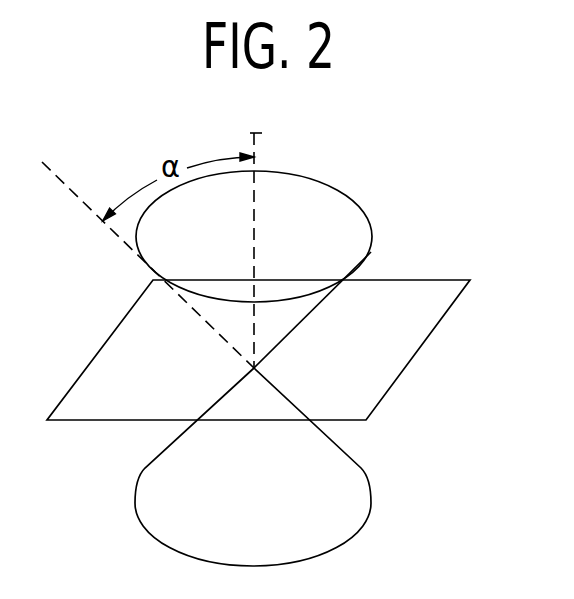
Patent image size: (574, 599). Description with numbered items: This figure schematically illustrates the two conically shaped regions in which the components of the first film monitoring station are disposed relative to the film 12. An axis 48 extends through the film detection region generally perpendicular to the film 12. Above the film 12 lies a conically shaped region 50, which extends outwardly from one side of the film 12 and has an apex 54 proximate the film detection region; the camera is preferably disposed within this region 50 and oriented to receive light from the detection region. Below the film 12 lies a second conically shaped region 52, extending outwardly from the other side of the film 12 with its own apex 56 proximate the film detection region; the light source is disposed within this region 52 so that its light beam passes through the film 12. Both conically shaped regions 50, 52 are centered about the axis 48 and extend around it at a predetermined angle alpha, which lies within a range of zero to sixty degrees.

The film 12 is at (402, 373).
The axis 48 is at (258, 133).
The conically shaped region 50 is at (354, 200).
The conically shaped region 52 is at (358, 530).
The apex 54 is at (254, 368).
The apex 56 is at (254, 368).